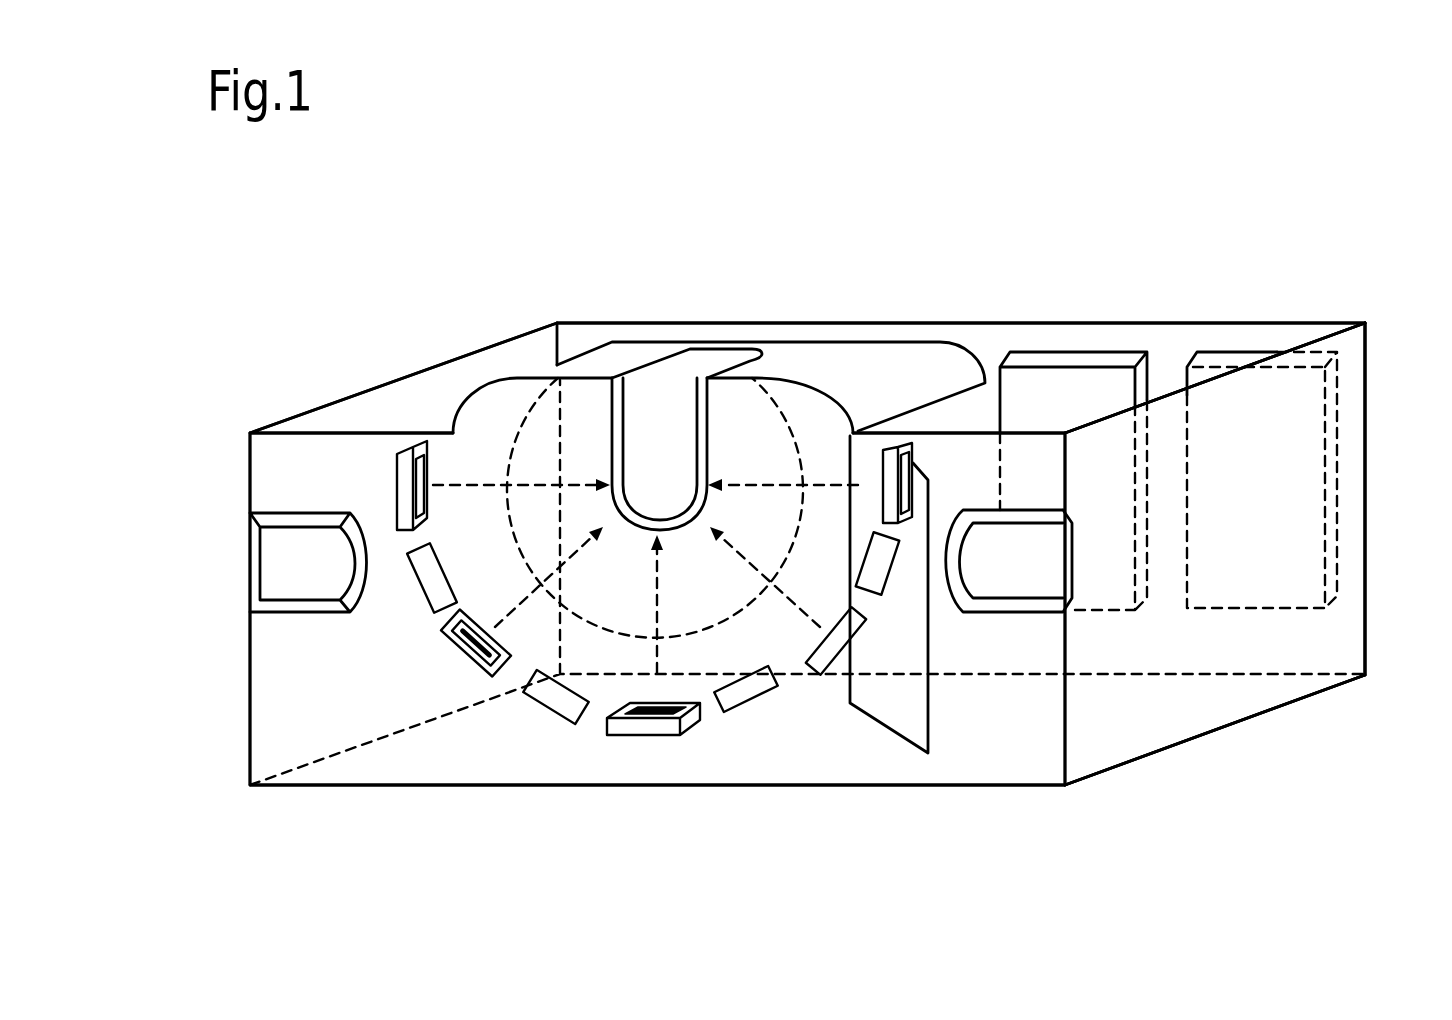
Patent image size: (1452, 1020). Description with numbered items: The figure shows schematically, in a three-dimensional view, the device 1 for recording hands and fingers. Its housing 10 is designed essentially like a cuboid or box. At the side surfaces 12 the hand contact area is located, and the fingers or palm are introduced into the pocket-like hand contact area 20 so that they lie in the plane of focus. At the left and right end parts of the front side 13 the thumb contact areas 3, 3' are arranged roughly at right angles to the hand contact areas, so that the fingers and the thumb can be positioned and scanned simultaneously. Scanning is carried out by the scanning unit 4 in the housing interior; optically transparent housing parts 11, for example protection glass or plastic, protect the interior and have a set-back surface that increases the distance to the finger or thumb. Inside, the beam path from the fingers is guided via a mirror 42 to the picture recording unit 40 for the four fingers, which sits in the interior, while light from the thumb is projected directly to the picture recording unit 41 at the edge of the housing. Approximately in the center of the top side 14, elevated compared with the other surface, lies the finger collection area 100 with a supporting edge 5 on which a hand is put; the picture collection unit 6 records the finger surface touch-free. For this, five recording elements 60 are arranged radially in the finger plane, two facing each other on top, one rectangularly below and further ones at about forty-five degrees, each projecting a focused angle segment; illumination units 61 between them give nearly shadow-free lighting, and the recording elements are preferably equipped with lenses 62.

The device 1 is at (360, 345).
The thumb contact area 3 is at (1009, 680).
The thumb contact area 3' is at (267, 562).
The scanning unit 4 is at (992, 400).
The supporting edge 5 is at (660, 520).
The picture collection unit 6 is at (382, 480).
The housing 10 is at (1058, 294).
The optically transparent housing part 11 is at (1358, 585).
The side surface 12 is at (1365, 452).
The front side 13 is at (727, 763).
The top side 14 is at (1018, 330).
The pocket-like hand contact area 20 is at (1155, 720).
The picture recording unit 40 is at (1108, 382).
The picture recording unit 41 is at (1237, 353).
The mirror 42 is at (910, 660).
The recording element 60 is at (418, 447).
The illumination unit 61 is at (550, 700).
The lens 62 is at (432, 487).
The finger collection area 100 is at (650, 325).